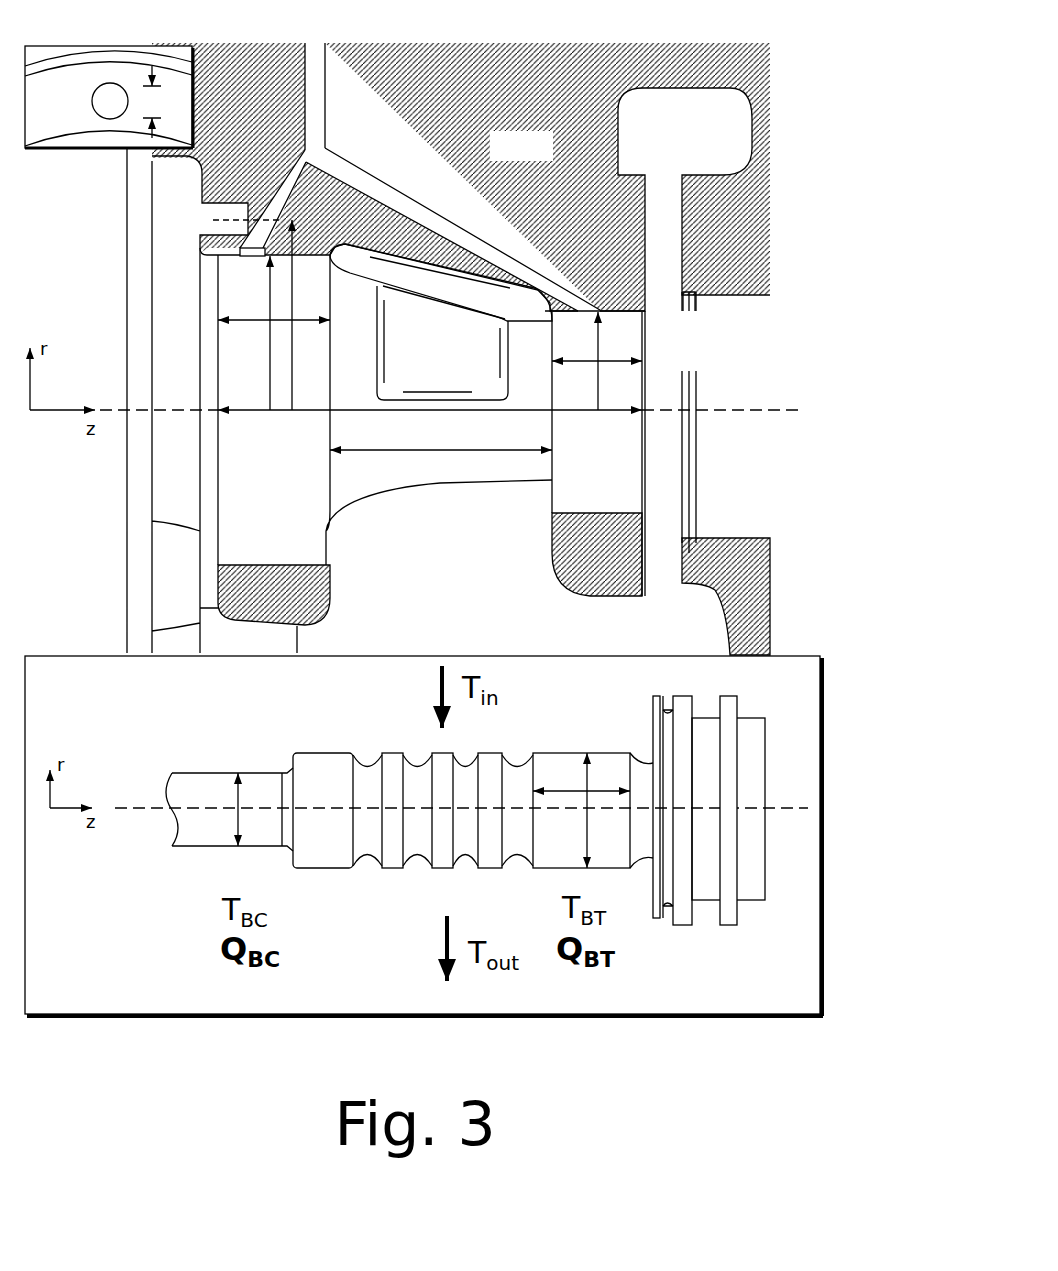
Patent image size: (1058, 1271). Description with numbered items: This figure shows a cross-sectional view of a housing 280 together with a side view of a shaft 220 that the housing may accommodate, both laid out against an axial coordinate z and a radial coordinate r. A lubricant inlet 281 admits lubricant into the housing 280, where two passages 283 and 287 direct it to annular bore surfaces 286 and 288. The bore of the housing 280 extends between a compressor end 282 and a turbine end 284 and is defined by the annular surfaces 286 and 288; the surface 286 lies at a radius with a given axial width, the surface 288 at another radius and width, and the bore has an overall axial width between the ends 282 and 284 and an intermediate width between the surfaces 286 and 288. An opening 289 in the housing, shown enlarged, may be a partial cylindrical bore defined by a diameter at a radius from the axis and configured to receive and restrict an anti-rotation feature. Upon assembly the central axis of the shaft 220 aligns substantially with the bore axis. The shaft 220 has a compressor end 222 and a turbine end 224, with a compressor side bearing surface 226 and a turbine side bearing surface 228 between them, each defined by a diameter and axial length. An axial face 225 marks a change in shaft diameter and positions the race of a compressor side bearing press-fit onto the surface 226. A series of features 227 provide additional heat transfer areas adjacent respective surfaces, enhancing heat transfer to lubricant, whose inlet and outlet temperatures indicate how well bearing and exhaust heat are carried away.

The shaft 220 is at (58, 703).
The compressor end 222 is at (216, 812).
The turbine end 224 is at (785, 908).
The axial face 225 is at (293, 762).
The compressor side bearing surface 226 is at (213, 775).
The features 227 is at (410, 738).
The turbine side bearing surface 228 is at (553, 755).
The housing 280 is at (538, 159).
The lubricant inlet 281 is at (325, 47).
The compressor end 282 is at (217, 362).
The passage 283 is at (287, 177).
The turbine end 284 is at (648, 346).
The annular bore surface 286 is at (328, 567).
The passage 287 is at (393, 187).
The annular bore surface 288 is at (552, 515).
The opening 289 is at (108, 120).